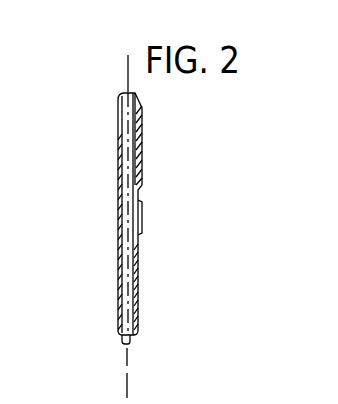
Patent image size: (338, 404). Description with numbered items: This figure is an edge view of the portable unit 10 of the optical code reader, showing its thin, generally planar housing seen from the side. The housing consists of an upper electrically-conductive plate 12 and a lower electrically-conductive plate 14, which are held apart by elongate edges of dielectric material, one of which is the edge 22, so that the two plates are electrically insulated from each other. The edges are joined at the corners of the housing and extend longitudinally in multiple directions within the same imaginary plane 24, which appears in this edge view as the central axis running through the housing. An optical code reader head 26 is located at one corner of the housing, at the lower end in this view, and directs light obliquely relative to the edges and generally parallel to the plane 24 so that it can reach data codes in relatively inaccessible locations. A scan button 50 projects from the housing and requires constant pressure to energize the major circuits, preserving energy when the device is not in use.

The portable unit 10 is at (162, 158).
The upper electrically-conductive plate 12 is at (138, 255).
The lower electrically-conductive plate 14 is at (118, 130).
The elongate edge 22 is at (118, 280).
The imaginary plane 24 is at (128, 72).
The optical code reader head 26 is at (130, 344).
The scan button 50 is at (138, 218).